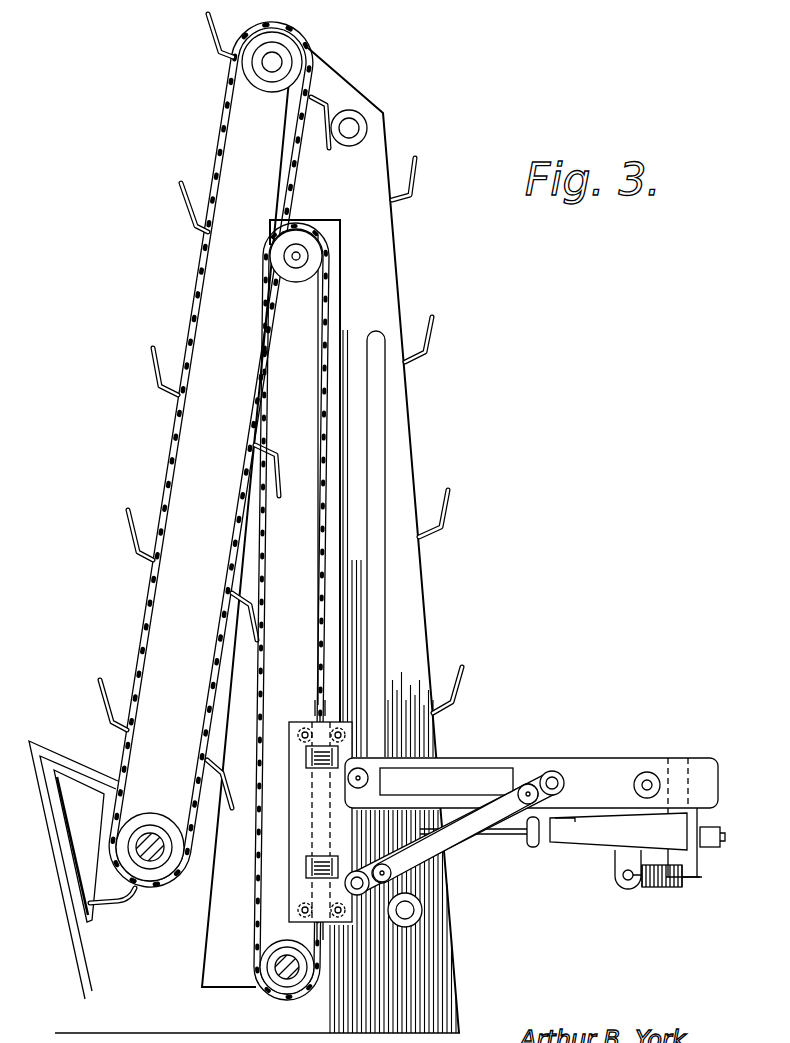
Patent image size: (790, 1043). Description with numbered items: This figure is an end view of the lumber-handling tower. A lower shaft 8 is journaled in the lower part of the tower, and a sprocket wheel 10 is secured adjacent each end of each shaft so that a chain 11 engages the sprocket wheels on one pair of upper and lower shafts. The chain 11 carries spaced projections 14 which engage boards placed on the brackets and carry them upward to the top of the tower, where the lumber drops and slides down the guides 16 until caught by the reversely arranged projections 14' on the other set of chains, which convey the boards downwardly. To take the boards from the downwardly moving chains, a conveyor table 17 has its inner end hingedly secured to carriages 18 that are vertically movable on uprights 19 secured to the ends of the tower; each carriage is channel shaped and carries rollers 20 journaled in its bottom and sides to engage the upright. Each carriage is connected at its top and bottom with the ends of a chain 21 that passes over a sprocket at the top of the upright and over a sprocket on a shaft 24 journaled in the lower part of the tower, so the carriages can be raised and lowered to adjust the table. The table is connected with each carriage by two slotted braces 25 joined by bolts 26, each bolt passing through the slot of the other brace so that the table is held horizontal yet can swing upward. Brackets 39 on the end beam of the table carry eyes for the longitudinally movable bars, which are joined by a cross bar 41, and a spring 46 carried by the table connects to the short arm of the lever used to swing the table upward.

The lower shaft 8 is at (157, 857).
The sprocket wheel 10 is at (288, 46).
The chain 11 is at (218, 136).
The projection 14 is at (209, 458).
The projection 14' is at (428, 435).
The guide 16 is at (341, 73).
The conveyor table 17 is at (513, 754).
The carriage 18 is at (320, 822).
The upright 19 is at (314, 637).
The roller 20 is at (313, 852).
The chain 21 is at (325, 417).
The shaft 24 is at (284, 975).
The slotted brace 25 is at (433, 866).
The bolt 26 is at (527, 800).
The bracket 39 is at (610, 831).
The cross bar 41 is at (531, 840).
The spring 46 is at (670, 887).